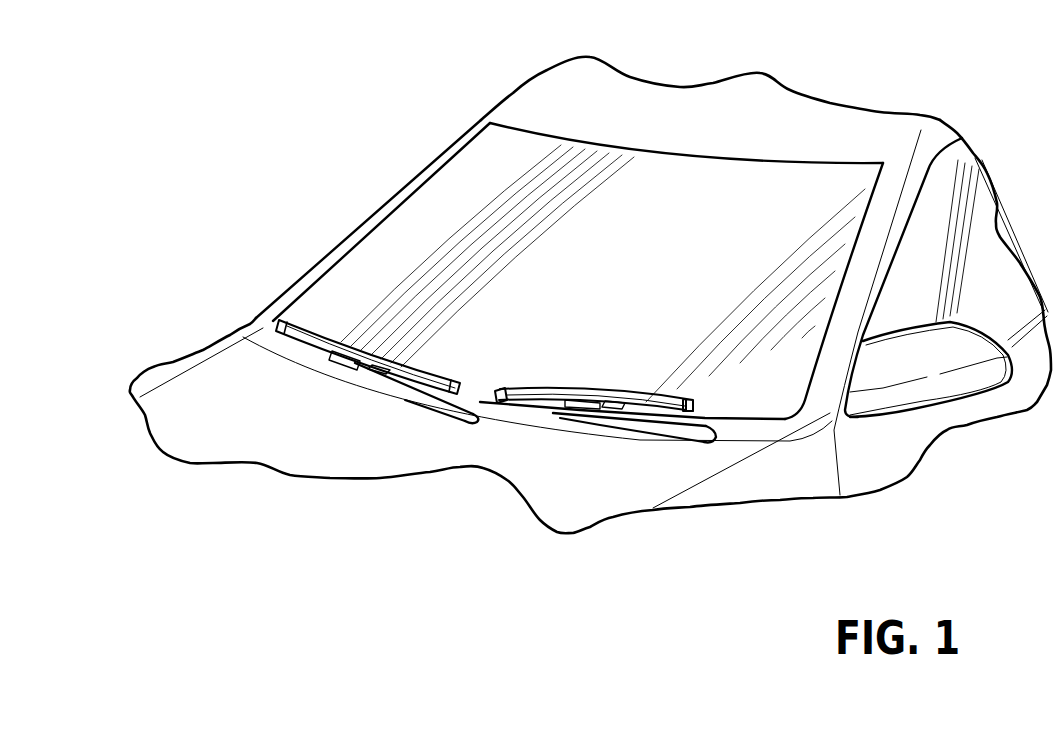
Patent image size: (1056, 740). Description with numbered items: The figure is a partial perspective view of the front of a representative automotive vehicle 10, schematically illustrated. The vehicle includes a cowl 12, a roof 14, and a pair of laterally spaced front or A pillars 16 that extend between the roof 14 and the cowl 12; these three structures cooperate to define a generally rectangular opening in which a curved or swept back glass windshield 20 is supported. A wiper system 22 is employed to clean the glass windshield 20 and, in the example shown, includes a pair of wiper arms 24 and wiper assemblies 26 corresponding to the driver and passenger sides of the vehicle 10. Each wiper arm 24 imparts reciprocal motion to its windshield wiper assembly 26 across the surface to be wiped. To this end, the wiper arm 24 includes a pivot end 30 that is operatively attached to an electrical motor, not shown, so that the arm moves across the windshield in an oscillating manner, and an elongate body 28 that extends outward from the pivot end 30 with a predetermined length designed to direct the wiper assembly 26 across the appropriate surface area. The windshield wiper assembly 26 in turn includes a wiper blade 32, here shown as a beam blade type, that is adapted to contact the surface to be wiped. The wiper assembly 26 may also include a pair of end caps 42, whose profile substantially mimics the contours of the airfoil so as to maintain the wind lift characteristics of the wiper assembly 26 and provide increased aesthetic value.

The vehicle 10 is at (349, 194).
The cowl 12 is at (265, 330).
The roof 14 is at (786, 108).
The A pillars 16 is at (470, 135).
The glass windshield 20 is at (665, 178).
The wiper system 22 is at (296, 349).
The wiper arm 24 is at (425, 412).
The wiper assembly 26 is at (327, 365).
The elongate body 28 is at (414, 393).
The pivot end 30 is at (467, 422).
The wiper blade 32 is at (345, 370).
The end caps 42 is at (502, 410).